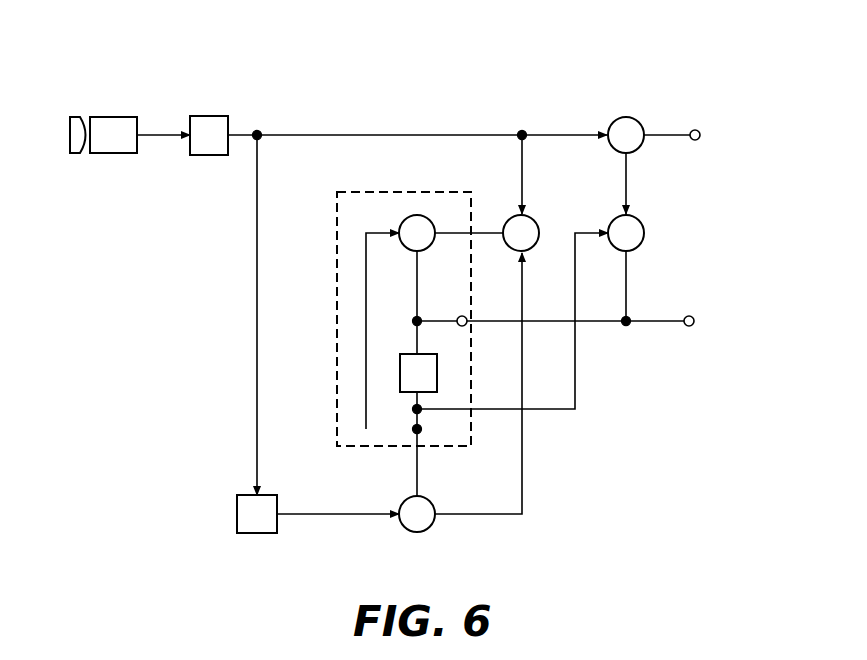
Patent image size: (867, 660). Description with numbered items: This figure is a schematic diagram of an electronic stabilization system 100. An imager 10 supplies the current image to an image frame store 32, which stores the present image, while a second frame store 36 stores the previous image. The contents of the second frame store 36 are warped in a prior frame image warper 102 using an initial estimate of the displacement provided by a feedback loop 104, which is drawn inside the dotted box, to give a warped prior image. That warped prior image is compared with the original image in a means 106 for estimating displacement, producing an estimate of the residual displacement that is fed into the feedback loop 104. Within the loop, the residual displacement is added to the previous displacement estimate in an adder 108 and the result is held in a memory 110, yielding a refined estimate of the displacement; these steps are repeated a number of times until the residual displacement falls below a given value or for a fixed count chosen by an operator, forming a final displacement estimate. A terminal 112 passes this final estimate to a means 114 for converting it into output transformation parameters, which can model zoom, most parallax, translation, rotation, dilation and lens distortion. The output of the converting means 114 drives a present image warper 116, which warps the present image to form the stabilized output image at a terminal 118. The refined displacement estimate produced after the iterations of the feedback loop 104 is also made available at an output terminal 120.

The imager 10 is at (97, 117).
The image frame store 32 is at (210, 116).
The second frame store 36 is at (237, 515).
The electronic stabilization system 100 is at (424, 113).
The prior frame image warper 102 is at (435, 530).
The feedback loop 104 is at (337, 208).
The means for estimating displacement 106 is at (533, 219).
The adder 108 is at (419, 215).
The memory 110 is at (400, 372).
The terminal 112 is at (465, 326).
The means for converting the final estimate of the displacement 114 is at (644, 233).
The present image warper 116 is at (627, 117).
The terminal 118 is at (700, 135).
The output terminal 120 is at (694, 321).